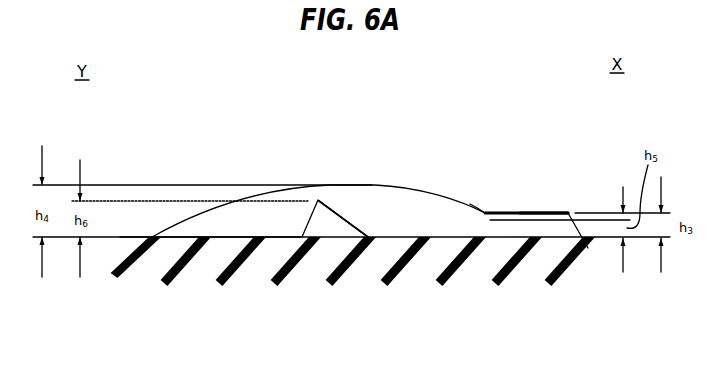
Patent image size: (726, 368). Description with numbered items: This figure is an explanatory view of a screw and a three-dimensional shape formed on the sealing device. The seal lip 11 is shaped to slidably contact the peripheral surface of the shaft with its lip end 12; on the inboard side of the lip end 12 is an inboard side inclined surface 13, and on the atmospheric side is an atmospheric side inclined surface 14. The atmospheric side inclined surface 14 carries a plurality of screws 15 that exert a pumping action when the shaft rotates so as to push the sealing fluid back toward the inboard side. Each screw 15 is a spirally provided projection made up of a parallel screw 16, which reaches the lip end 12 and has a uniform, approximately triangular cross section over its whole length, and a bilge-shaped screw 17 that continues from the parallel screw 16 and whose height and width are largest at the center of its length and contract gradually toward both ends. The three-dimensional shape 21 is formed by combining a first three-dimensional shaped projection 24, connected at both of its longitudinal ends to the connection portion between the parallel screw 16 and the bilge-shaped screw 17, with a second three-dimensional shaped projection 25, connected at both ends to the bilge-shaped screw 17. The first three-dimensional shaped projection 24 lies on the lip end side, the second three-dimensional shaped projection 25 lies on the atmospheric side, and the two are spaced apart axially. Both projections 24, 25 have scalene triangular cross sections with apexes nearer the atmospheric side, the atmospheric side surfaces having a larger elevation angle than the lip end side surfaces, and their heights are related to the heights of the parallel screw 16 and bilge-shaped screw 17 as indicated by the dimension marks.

The seal lip 11 is at (205, 272).
The lip end 12 is at (578, 224).
The inboard side inclined surface 13 is at (590, 252).
The atmospheric side inclined surface 14 is at (142, 237).
The screw 15 is at (372, 190).
The parallel screw 16 is at (533, 213).
The bilge-shaped screw 17 is at (273, 213).
The three-dimensional shape 21 is at (487, 213).
The first three-dimensional shaped projection 24 is at (509, 213).
The second three-dimensional shaped projection 25 is at (328, 222).